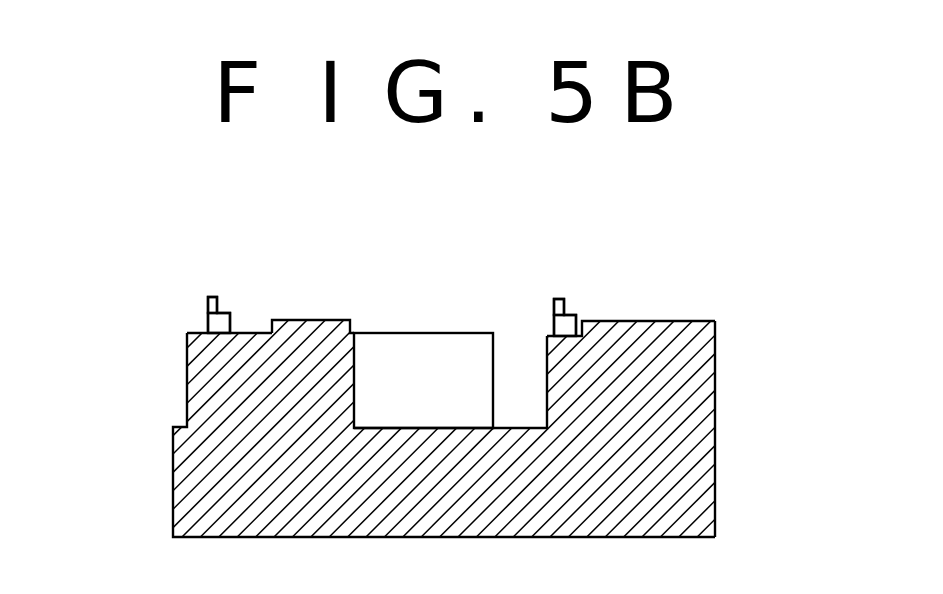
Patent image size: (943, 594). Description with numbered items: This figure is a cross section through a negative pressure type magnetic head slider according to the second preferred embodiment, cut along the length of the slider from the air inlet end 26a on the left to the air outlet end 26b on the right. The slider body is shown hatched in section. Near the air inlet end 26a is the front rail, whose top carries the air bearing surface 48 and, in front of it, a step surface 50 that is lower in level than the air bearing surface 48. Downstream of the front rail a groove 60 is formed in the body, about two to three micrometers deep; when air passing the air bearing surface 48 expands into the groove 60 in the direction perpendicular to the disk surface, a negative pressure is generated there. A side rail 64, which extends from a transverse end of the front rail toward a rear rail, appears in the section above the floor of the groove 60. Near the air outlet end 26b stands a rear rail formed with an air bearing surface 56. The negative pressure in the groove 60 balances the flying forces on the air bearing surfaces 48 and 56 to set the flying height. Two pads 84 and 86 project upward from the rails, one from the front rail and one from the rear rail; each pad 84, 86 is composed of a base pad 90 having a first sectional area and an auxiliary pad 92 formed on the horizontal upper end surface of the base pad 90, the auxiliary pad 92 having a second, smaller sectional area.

The air inlet end 26a is at (173, 470).
The air outlet end 26b is at (715, 422).
The air bearing surface 48 is at (333, 320).
The step surface 50 is at (197, 333).
The air bearing surface 56 is at (680, 321).
The groove 60 is at (521, 428).
The side rail 64 is at (415, 333).
The pad 84 is at (224, 272).
The pad 86 is at (572, 280).
The base pad 90 is at (224, 313).
The auxiliary pad 92 is at (210, 297).